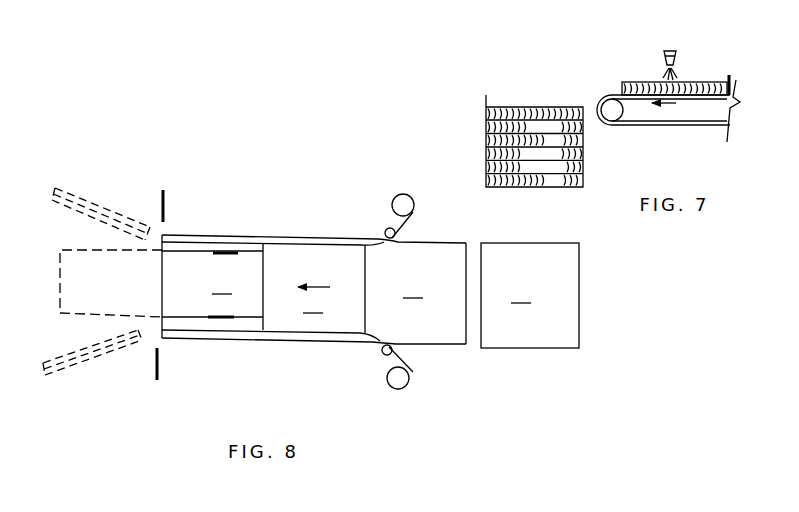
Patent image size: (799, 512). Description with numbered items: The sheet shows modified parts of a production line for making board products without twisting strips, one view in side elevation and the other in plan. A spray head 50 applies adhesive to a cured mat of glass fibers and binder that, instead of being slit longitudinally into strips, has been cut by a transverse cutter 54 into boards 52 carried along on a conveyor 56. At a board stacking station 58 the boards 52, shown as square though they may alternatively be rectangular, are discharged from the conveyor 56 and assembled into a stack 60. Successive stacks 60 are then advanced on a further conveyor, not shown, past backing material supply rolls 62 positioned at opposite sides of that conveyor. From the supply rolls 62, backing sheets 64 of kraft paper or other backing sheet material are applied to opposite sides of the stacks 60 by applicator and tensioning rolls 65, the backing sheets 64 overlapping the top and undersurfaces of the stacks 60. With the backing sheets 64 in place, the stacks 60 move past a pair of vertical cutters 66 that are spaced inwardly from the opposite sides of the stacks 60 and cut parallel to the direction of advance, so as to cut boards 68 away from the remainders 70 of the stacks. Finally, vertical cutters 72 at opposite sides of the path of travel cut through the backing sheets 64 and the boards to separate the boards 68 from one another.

In FIG. 7, the spray head 50 is at (675, 56).
In FIG. 7, the boards 52 is at (701, 82).
In FIG. 7, the transverse cutter 54 is at (737, 78).
In FIG. 7, the conveyor 56 is at (677, 126).
In FIG. 7, the board stacking station 58 is at (482, 144).
In FIG. 8, the board stacking station 58 is at (529, 353).
In FIG. 7, the stack 60 is at (592, 150).
In FIG. 8, the stack 60 is at (415, 295).
In FIG. 8, the backing material supply rolls 62 is at (414, 206).
In FIG. 8, the backing sheets 64 is at (409, 218).
In FIG. 8, the applicator and tensioning rolls 65 is at (385, 232).
In FIG. 8, the vertical cutters 66 is at (238, 253).
In FIG. 8, the boards 68 is at (105, 209).
In FIG. 8, the remainders of the stacks 70 is at (74, 306).
In FIG. 8, the vertical cutters 72 is at (166, 210).